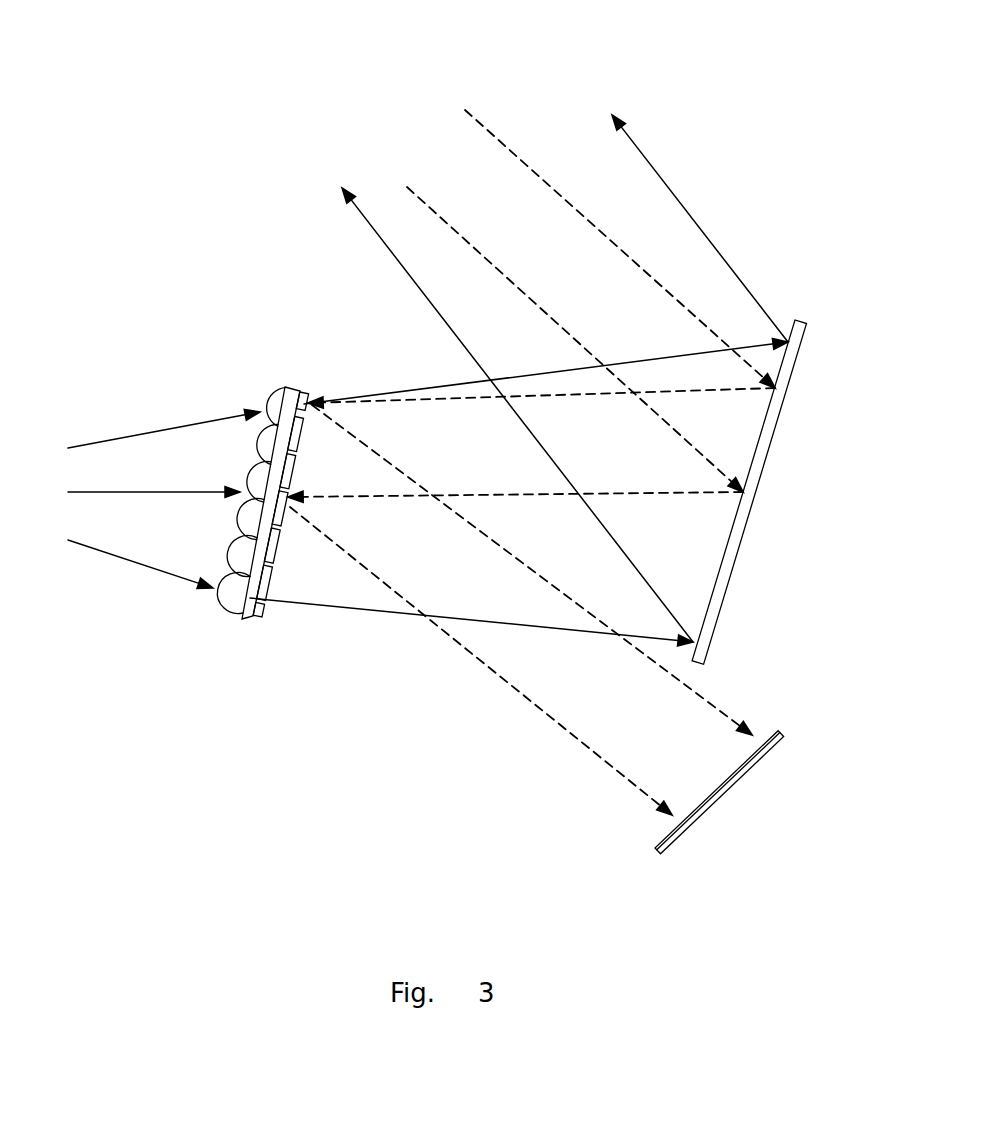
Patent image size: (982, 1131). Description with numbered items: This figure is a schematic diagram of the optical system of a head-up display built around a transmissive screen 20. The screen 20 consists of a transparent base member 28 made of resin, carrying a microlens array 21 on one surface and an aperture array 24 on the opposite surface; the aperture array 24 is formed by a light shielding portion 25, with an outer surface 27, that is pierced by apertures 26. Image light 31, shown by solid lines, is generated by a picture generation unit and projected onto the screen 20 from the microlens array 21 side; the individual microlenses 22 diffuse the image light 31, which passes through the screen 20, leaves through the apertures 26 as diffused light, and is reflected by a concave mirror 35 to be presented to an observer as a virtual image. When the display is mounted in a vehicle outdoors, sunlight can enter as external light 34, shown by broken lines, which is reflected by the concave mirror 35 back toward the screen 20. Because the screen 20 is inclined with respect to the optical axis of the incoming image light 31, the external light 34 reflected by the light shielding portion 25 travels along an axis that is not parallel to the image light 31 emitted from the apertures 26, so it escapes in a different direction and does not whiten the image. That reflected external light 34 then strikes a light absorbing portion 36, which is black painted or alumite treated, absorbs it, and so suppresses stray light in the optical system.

The screen 20 is at (207, 626).
The microlens array 21 is at (285, 388).
The microlens 22 is at (266, 478).
The aperture array 24 is at (317, 505).
The light shielding portion 25 is at (279, 515).
The aperture 26 is at (304, 412).
The outer surface 27 is at (293, 466).
The transparent base member 28 is at (235, 600).
The image light 31 is at (140, 567).
The external light 34 is at (515, 143).
The concave mirror 35 is at (805, 318).
The light absorbing portion 36 is at (723, 787).